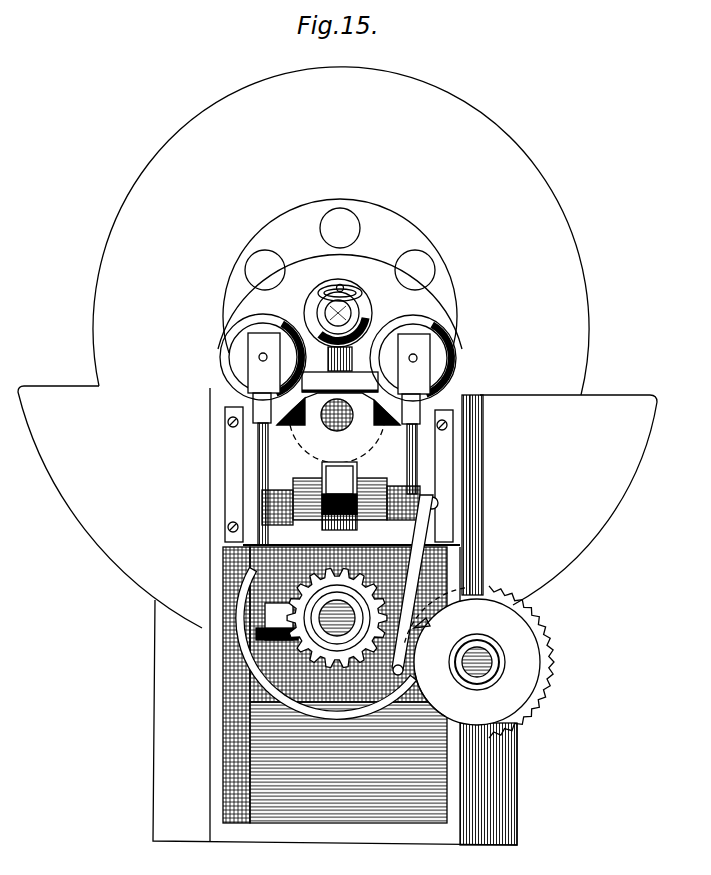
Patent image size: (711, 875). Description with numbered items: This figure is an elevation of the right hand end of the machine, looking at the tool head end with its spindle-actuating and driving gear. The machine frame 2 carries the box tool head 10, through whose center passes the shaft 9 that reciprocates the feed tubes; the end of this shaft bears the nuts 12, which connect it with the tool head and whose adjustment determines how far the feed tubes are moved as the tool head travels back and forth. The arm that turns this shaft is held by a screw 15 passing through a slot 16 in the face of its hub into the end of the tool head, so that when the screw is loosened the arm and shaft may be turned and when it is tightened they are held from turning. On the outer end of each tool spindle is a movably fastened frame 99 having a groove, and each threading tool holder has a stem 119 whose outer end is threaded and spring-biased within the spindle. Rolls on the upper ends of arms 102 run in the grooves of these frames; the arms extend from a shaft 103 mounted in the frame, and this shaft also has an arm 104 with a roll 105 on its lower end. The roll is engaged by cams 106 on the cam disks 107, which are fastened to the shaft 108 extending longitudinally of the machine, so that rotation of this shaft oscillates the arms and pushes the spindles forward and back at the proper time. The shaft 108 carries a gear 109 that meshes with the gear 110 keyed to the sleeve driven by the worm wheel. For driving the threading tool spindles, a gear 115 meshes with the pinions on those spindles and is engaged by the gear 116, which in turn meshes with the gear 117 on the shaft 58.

The frame 2 is at (341, 231).
The shaft 9 is at (373, 306).
The box tool head 10 is at (340, 276).
The nuts 12 is at (327, 316).
The screw 15 is at (350, 283).
The slot 16 is at (322, 293).
The frame 99 is at (244, 357).
The stem 119 is at (259, 360).
The arms 102 is at (260, 470).
The shaft 103 is at (438, 504).
The arm 104 is at (420, 560).
The roll 105 is at (430, 698).
The cams 106 is at (428, 623).
The cam disks 107 is at (477, 662).
The shaft 108 is at (482, 661).
The gear 109 is at (548, 672).
The gear 110 is at (333, 693).
The gear 115 is at (345, 433).
The gear 116 is at (222, 580).
The gear 117 is at (252, 630).
The shaft 58 is at (310, 628).